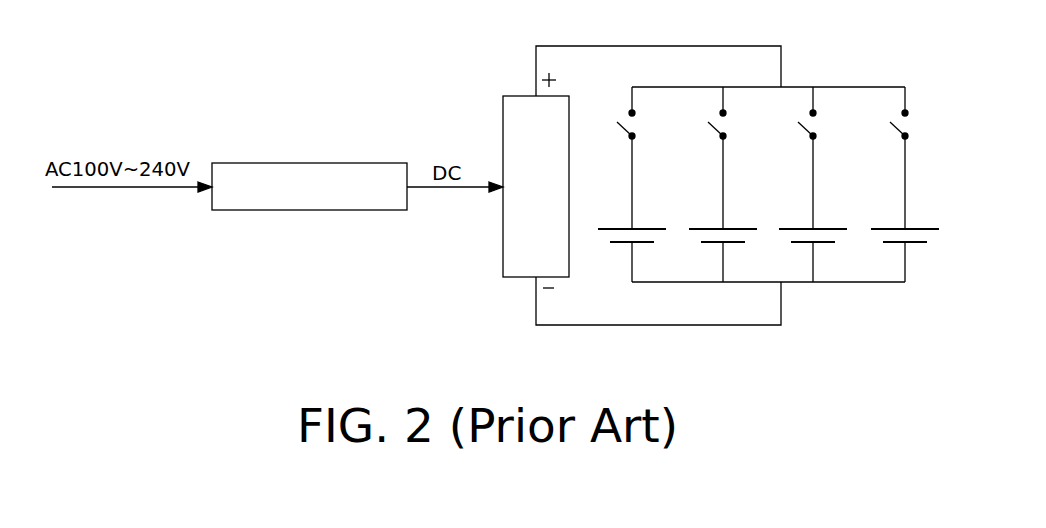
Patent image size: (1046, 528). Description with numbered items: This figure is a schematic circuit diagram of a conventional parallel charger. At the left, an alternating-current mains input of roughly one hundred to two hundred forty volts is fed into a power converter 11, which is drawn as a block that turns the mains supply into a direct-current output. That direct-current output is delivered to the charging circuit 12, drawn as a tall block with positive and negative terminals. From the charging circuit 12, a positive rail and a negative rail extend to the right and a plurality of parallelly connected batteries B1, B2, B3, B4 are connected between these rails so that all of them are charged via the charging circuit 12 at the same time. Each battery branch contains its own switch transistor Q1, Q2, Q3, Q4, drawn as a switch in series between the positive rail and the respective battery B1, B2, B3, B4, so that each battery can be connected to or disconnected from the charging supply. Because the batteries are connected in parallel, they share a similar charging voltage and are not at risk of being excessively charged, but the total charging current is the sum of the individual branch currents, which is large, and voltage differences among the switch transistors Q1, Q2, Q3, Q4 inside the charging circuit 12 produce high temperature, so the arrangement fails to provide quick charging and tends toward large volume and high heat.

The power converter 11 is at (278, 163).
The charging circuit 12 is at (510, 96).
The switch transistor Q1 is at (644, 115).
The switch transistor Q2 is at (735, 115).
The switch transistor Q3 is at (825, 115).
The switch transistor Q4 is at (917, 115).
The battery B1 is at (641, 209).
The battery B2 is at (732, 209).
The battery B3 is at (822, 209).
The battery B4 is at (914, 209).